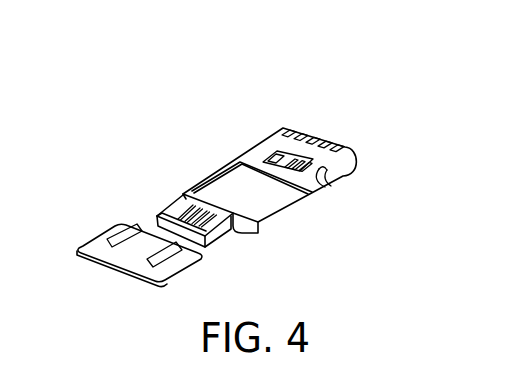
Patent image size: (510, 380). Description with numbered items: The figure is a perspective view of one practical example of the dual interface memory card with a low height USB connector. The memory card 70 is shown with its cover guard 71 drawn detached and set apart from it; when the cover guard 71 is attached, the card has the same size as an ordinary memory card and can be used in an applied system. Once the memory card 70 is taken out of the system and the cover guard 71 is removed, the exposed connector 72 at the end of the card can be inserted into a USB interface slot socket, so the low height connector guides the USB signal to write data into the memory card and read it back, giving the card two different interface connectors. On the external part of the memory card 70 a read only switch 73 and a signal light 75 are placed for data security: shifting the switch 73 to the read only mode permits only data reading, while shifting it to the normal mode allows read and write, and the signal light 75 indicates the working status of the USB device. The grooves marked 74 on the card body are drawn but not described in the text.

The memory card 70 is at (347, 160).
The cover guard 71 is at (126, 256).
The connector 72 is at (174, 220).
The read only switch 73 is at (277, 152).
The grooves 74 is at (320, 138).
The signal light 75 is at (328, 185).